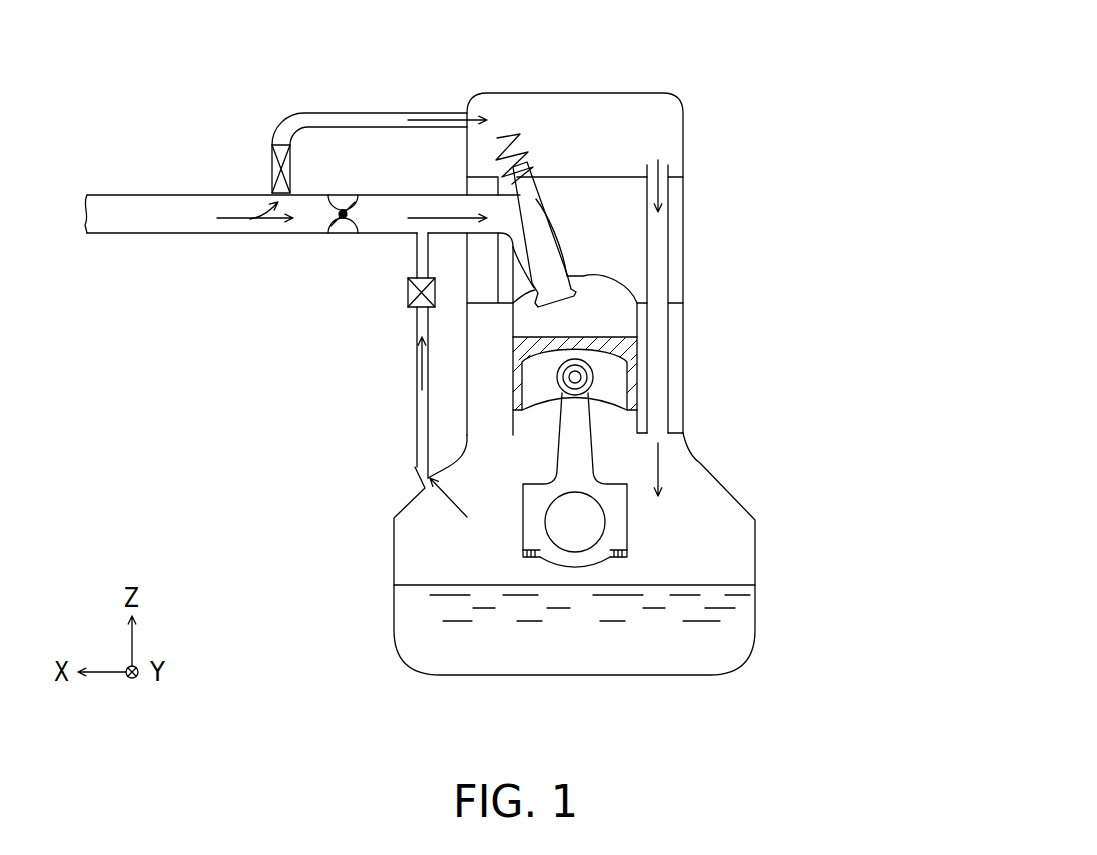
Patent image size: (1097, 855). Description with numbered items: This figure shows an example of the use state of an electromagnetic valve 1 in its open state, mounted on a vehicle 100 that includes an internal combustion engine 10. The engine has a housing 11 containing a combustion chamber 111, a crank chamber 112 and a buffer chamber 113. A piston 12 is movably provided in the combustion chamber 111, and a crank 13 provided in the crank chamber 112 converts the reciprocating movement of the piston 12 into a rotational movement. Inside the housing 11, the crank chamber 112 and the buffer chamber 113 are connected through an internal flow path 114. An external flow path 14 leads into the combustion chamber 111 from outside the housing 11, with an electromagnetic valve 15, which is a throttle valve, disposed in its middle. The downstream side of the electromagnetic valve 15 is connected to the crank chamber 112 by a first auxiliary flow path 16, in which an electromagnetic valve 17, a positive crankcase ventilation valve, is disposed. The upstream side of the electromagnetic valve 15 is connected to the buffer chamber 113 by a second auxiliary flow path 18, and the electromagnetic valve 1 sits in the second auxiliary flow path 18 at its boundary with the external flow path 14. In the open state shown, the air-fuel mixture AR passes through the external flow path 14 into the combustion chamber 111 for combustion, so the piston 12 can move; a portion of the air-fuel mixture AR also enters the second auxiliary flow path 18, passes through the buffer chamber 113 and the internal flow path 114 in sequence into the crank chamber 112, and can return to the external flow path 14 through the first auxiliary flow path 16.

The vehicle 100 is at (854, 54).
The internal combustion engine 10 is at (787, 147).
The housing 11 is at (715, 468).
The piston 12 is at (647, 377).
The crank 13 is at (639, 508).
The external flow path 14 is at (150, 192).
The electromagnetic valve (throttle valve) 15 is at (345, 232).
The first auxiliary flow path 16 is at (417, 418).
The electromagnetic valve (PCV valve) 17 is at (408, 292).
The second auxiliary flow path 18 is at (396, 110).
The electromagnetic valve 1 is at (270, 133).
The combustion chamber 111 is at (613, 317).
The crank chamber 112 is at (722, 555).
The buffer chamber 113 is at (651, 122).
The internal flow path 114 is at (670, 233).
The air-fuel mixture AR is at (460, 112).